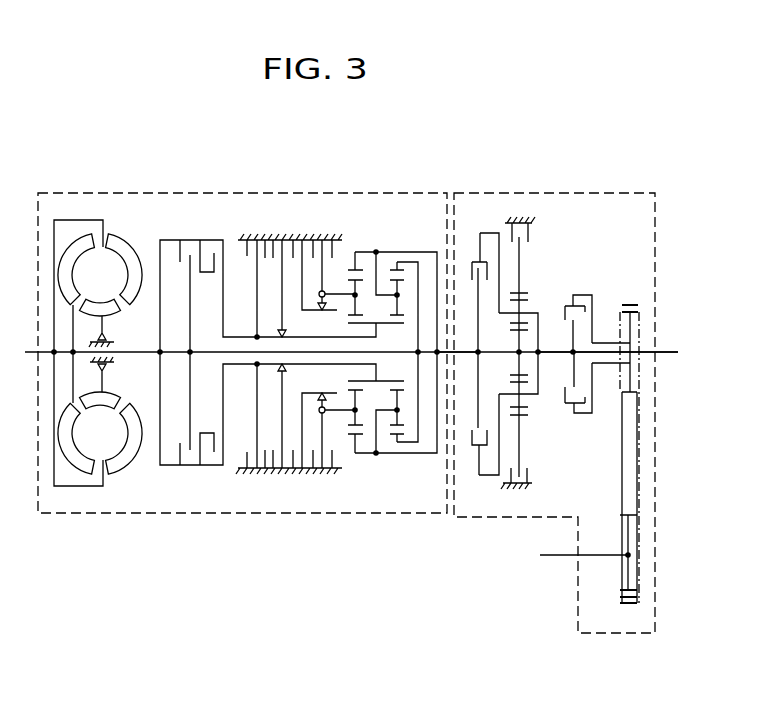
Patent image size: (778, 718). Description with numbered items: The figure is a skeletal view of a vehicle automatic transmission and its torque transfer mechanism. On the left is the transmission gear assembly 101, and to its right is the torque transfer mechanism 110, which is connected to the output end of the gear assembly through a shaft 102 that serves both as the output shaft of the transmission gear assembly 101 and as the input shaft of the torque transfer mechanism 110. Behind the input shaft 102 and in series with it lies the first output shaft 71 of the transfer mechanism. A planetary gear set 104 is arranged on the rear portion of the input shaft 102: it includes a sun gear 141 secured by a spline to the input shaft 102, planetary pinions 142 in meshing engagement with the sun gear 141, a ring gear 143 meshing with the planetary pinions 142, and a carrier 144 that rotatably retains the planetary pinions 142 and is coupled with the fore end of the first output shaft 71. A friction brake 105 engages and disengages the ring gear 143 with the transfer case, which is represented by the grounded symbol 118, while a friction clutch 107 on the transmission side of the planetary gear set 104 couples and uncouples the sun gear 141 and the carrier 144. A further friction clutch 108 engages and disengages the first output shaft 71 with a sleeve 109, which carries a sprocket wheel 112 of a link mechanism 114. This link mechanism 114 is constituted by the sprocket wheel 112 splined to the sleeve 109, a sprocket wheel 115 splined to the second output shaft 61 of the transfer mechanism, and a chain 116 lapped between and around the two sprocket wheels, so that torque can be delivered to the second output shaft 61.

The transmission gear assembly 101 is at (313, 192).
The shaft 102 is at (470, 348).
The torque transfer mechanism 110 is at (477, 192).
The friction clutch 107 is at (472, 262).
The carrier 144 is at (492, 296).
The ring gear 143 is at (522, 290).
The friction brake 105 is at (522, 238).
The stationary casing 118 is at (520, 218).
The planetary gear set 104 is at (534, 291).
The planetary pinions 142 is at (523, 322).
The sun gear 141 is at (519, 337).
The friction clutch 108 is at (574, 295).
The sleeve 109 is at (608, 340).
The first output shaft 71 is at (598, 346).
The sprocket wheel 112 is at (639, 301).
The link mechanism 114 is at (645, 305).
The chain 116 is at (620, 436).
The second output shaft 61 is at (603, 552).
The sprocket wheel 115 is at (628, 606).